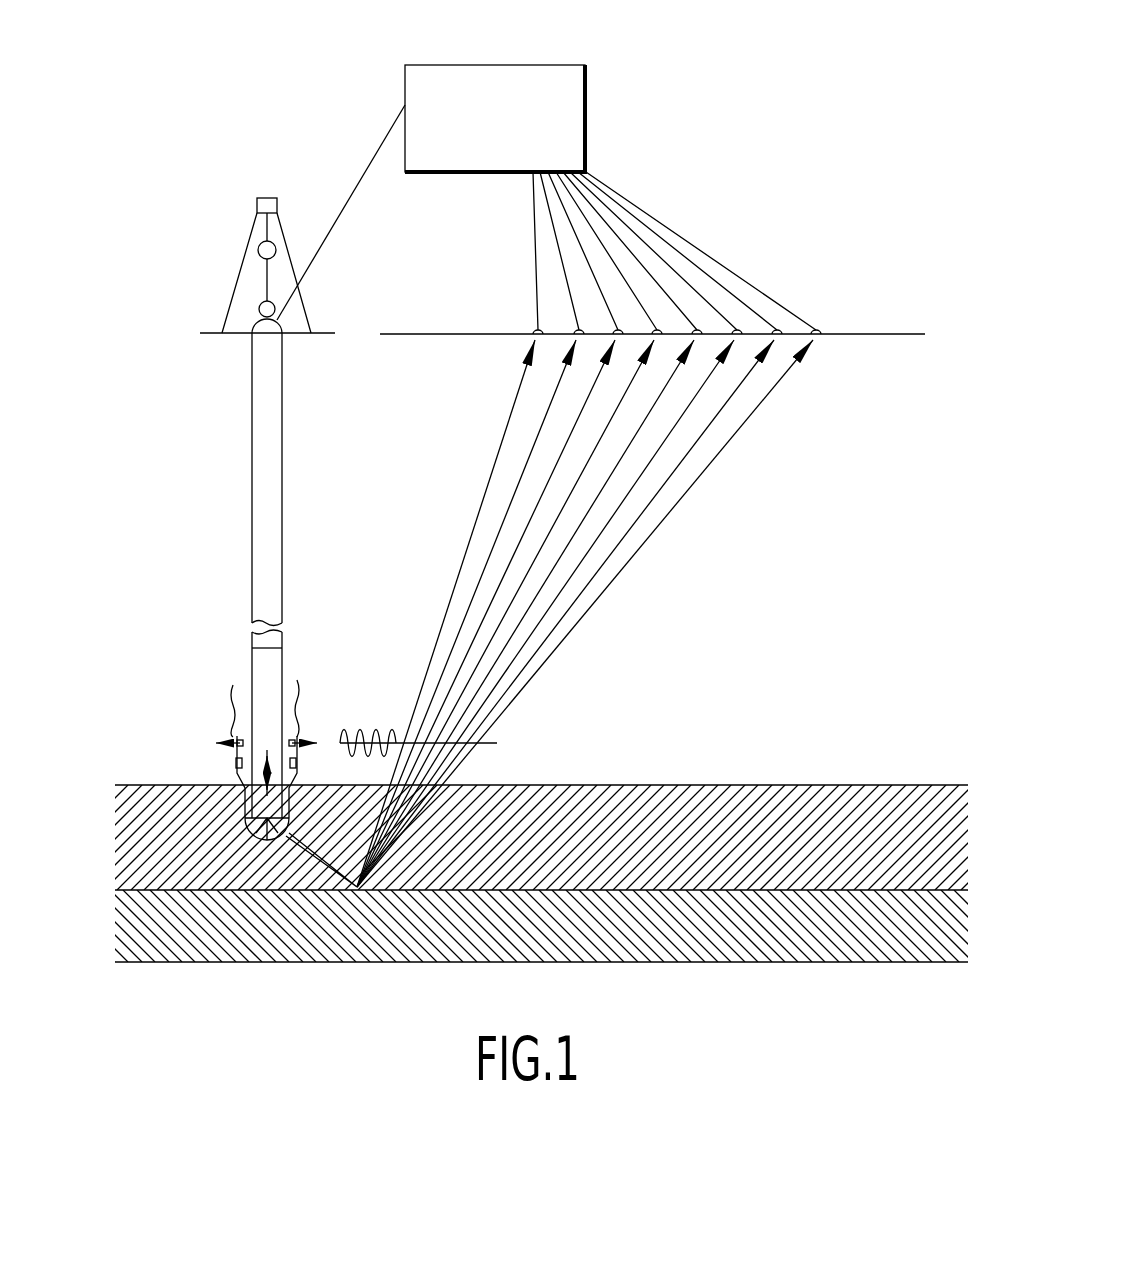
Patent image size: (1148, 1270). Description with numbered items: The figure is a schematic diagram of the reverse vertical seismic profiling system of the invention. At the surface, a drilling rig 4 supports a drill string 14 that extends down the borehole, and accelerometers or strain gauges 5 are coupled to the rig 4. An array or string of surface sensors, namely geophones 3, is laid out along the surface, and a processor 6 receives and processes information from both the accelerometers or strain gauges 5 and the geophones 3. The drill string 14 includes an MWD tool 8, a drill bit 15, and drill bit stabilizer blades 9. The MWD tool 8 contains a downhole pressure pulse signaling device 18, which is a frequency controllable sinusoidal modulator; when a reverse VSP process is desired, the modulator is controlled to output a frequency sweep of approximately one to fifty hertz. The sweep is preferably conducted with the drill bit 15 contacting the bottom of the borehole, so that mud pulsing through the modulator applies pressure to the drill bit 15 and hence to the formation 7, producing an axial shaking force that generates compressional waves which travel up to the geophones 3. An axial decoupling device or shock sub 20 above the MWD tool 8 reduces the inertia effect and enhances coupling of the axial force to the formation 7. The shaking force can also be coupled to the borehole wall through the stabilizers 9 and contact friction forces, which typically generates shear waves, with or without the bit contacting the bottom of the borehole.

The surface sensors 3 is at (645, 308).
The drilling rig 4 is at (218, 282).
The accelerometers or strain gauges 5 is at (296, 318).
The processor 6 is at (586, 78).
The formation 7 is at (636, 832).
The MWD tool 8 is at (296, 666).
The drill bit stabilizer blades 9 is at (308, 728).
The drill string 14 is at (252, 518).
The drill bit 15 is at (278, 848).
The downhole pressure pulse signaling device 18 is at (262, 670).
The shock sub 20 is at (252, 643).